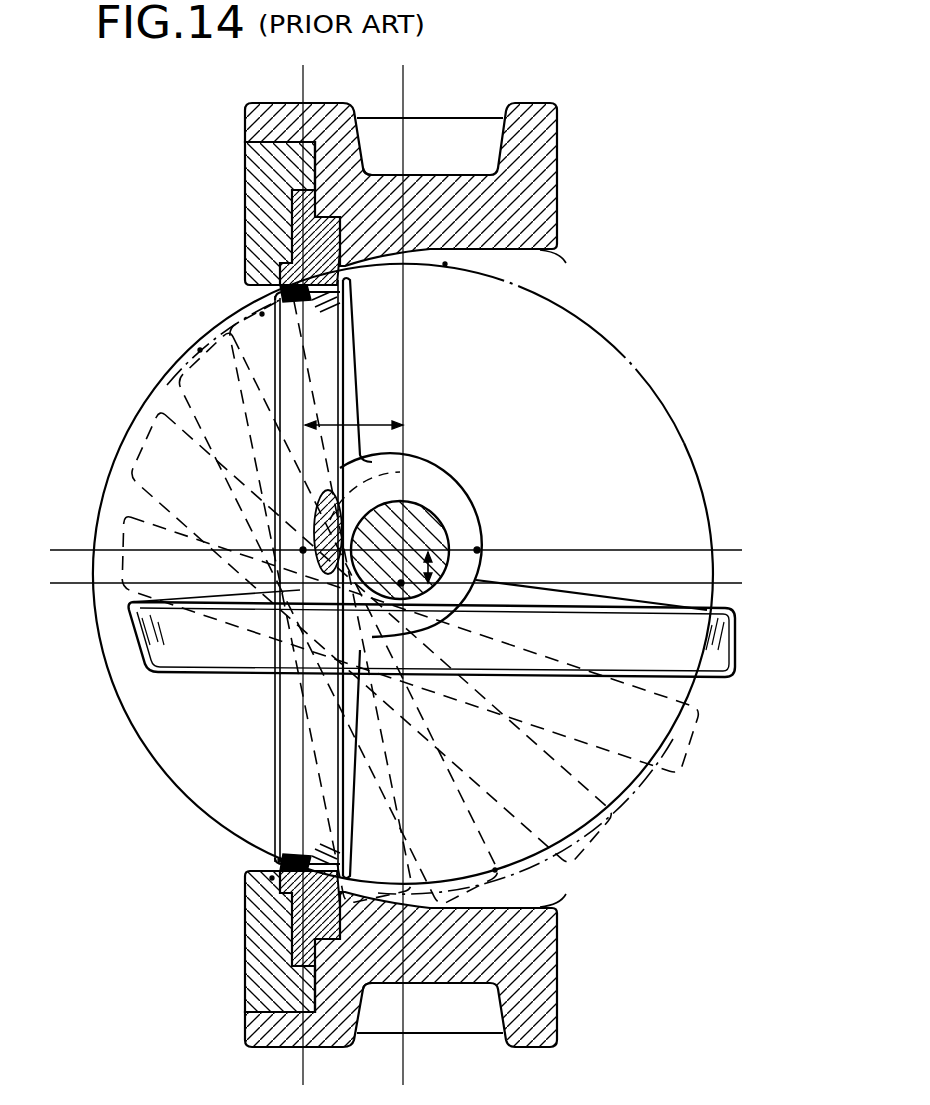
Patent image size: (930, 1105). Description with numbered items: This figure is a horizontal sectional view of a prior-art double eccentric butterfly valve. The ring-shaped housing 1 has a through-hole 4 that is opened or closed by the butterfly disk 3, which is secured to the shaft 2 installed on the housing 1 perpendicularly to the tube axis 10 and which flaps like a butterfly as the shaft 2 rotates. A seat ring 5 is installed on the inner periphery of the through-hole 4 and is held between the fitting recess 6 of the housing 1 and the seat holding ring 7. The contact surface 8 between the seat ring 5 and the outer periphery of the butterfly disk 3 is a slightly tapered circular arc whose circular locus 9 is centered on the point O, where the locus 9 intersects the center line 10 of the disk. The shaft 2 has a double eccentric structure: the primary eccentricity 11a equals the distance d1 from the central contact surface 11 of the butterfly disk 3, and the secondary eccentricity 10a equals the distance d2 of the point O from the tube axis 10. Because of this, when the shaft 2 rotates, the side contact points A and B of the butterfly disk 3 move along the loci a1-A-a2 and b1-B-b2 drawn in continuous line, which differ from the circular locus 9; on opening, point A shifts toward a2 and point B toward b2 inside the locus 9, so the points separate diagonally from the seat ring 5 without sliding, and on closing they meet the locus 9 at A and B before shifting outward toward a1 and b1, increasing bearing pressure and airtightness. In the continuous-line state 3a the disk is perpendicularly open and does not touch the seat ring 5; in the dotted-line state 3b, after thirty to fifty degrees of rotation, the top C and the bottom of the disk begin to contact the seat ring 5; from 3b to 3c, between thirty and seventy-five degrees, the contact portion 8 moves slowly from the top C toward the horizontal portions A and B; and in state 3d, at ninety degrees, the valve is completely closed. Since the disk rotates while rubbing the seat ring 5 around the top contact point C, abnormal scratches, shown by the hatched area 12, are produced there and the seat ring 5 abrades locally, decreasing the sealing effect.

The housing 1 is at (550, 168).
The shaft 2 is at (433, 523).
The butterfly disk 3 is at (453, 578).
The continuous-line state of the butterfly disk 3a is at (150, 668).
The dotted-line state of the butterfly disk 3b is at (140, 405).
The state of the butterfly disk 3c is at (192, 333).
The continuous-line state of the butterfly disk 3d is at (268, 283).
The through-hole 4 is at (552, 260).
The seat ring 5 is at (283, 255).
The fitting recess 6 is at (358, 135).
The seat holding ring 7 is at (250, 187).
The contact surface 8 is at (347, 292).
The circular locus 9 is at (104, 480).
The tube axis 10 is at (76, 583).
The eccentricity 10a is at (74, 550).
The central contact surface 11 is at (305, 375).
The eccentricity 11a is at (403, 333).
The hatched area 12 is at (400, 464).
The contact point A is at (256, 312).
The contact point B is at (272, 878).
The point O is at (403, 583).
The top contact point C is at (300, 552).
The contact point a1 is at (445, 264).
The contact point a2 is at (200, 350).
The contact point b1 is at (280, 860).
The contact point b2 is at (495, 870).
The distance d1 is at (403, 425).
The distance d2 is at (437, 567).